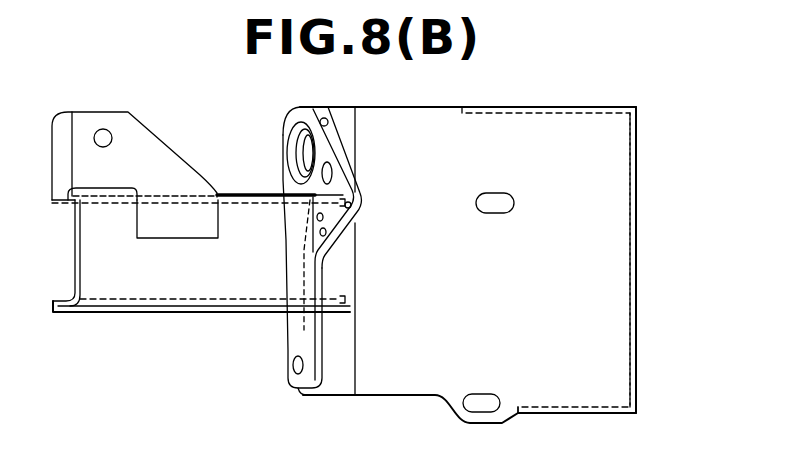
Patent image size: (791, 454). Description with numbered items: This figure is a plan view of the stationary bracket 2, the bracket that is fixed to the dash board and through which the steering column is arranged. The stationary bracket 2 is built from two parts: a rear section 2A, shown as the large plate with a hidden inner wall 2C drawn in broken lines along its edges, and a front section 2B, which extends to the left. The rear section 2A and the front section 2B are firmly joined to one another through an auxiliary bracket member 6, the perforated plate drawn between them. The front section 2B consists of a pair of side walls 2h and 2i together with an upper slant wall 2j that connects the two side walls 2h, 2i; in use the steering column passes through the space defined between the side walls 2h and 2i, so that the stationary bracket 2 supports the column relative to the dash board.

The stationary bracket 2 is at (532, 98).
The rear section 2A is at (636, 242).
The front section 2B is at (243, 184).
The rear wall portion 2C is at (620, 316).
The side wall 2h is at (226, 190).
The side wall 2i is at (123, 313).
The upper slant wall 2j is at (208, 280).
The auxiliary bracket member 6 is at (342, 189).